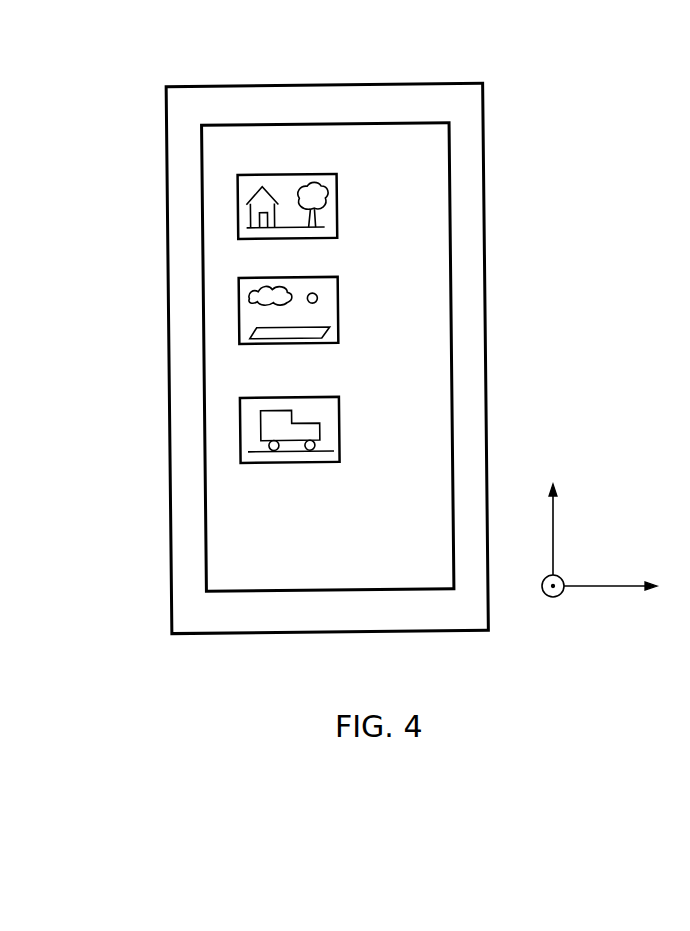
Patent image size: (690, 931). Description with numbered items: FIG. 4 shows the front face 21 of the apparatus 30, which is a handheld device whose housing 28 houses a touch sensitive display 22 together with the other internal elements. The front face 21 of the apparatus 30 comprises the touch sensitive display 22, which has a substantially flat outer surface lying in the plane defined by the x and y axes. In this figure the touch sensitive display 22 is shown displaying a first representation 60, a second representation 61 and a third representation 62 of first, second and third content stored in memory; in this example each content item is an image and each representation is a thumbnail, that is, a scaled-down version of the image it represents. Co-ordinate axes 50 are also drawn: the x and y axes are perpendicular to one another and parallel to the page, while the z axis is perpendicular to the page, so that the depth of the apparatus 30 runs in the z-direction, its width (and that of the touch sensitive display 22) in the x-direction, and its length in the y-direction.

The front face 21 is at (462, 196).
The touch sensitive display 22 is at (352, 123).
The housing 28 is at (171, 572).
The apparatus 30 is at (328, 376).
The co-ordinate axes 50 is at (620, 616).
The first representation 60 is at (339, 206).
The second representation 61 is at (339, 304).
The third representation 62 is at (339, 429).